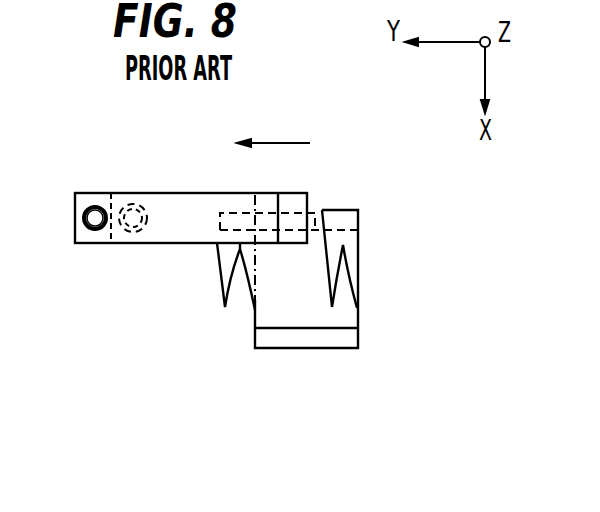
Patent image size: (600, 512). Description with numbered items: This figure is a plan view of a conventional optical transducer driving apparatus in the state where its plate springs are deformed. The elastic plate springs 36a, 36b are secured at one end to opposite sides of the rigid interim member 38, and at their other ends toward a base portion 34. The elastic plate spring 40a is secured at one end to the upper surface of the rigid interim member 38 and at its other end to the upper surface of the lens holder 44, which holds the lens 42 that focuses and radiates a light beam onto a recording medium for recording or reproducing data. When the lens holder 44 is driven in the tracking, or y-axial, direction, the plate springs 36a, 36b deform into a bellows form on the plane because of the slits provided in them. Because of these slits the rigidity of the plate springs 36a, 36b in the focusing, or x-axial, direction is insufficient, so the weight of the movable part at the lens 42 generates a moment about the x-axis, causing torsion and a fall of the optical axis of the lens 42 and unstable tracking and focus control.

The base block 34 is at (352, 337).
The elastic plate spring 36a is at (357, 283).
The elastic plate spring 36b is at (222, 277).
The rigid interim member 38 is at (312, 196).
The elastic plate spring 40a is at (178, 233).
The lens 42 is at (97, 207).
The lens holder 44 is at (93, 245).